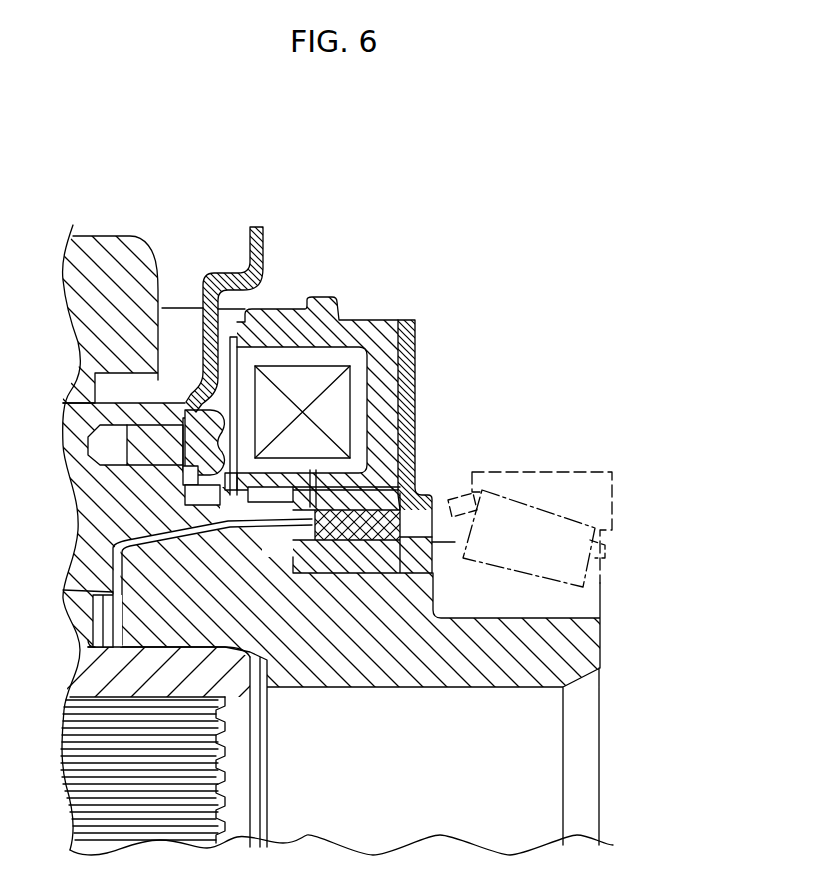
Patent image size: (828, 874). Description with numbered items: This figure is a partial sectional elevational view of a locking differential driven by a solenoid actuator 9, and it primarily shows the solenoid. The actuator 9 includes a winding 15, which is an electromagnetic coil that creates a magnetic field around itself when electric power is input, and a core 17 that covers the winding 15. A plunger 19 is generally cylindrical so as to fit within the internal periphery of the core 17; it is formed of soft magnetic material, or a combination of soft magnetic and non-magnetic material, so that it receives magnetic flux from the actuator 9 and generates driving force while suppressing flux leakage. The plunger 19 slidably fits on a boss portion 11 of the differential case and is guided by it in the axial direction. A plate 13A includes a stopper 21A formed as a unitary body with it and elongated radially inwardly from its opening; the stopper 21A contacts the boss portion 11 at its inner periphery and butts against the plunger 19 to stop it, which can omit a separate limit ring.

The solenoid actuator 9 is at (341, 273).
The boss portion 11 is at (600, 647).
The plate 13A is at (415, 354).
The winding 15 is at (338, 408).
The core 17 is at (384, 371).
The plunger 19 is at (335, 575).
The stopper 21A is at (432, 564).